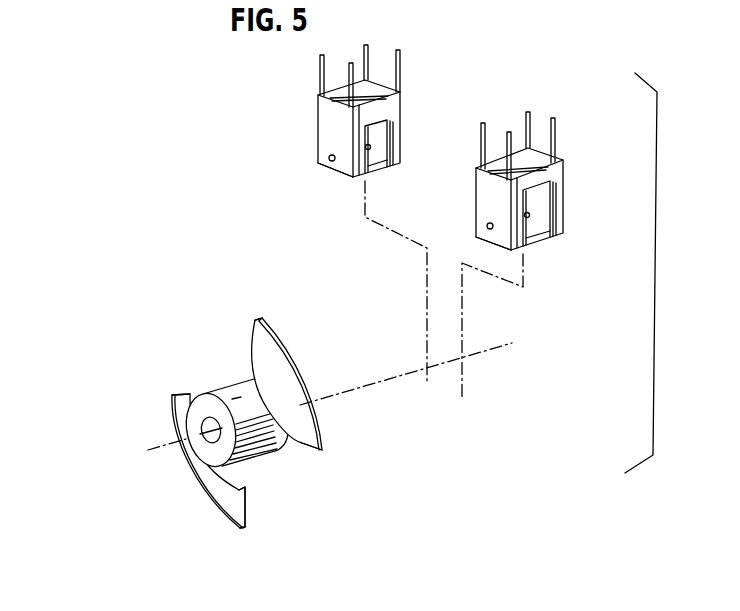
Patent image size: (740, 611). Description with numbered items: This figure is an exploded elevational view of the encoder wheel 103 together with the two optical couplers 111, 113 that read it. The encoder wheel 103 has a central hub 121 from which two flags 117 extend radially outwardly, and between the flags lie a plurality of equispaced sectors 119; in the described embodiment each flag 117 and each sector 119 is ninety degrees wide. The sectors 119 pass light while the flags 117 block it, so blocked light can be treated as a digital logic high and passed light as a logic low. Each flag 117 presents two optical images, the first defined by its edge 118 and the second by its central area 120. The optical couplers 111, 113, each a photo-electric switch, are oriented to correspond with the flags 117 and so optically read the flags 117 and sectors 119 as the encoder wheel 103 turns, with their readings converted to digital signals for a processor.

The encoder wheel 103 is at (98, 382).
The optical coupler 111 is at (315, 133).
The optical coupler 113 is at (573, 177).
The flag 117 is at (300, 366).
The edge 118 is at (250, 335).
The sector 119 is at (218, 364).
The central area 120 is at (278, 368).
The hub 121 is at (200, 407).